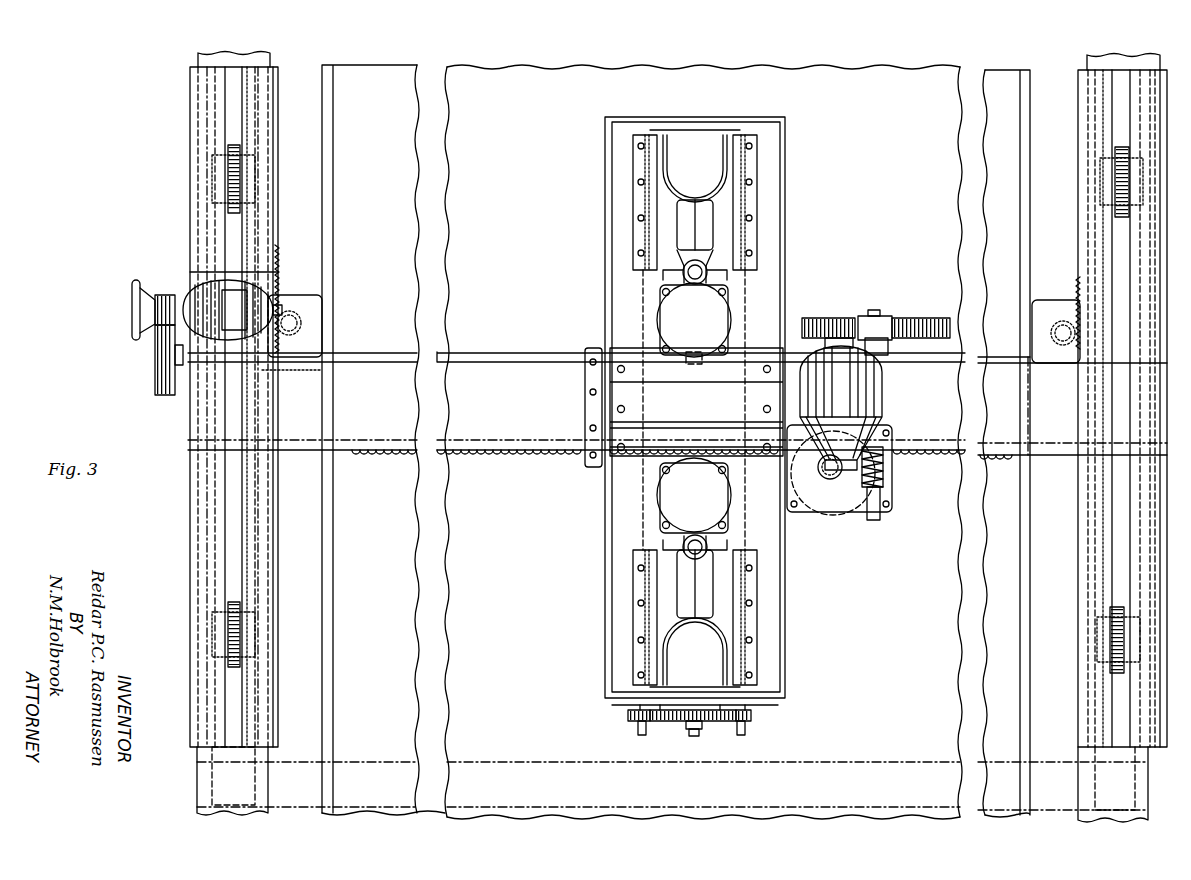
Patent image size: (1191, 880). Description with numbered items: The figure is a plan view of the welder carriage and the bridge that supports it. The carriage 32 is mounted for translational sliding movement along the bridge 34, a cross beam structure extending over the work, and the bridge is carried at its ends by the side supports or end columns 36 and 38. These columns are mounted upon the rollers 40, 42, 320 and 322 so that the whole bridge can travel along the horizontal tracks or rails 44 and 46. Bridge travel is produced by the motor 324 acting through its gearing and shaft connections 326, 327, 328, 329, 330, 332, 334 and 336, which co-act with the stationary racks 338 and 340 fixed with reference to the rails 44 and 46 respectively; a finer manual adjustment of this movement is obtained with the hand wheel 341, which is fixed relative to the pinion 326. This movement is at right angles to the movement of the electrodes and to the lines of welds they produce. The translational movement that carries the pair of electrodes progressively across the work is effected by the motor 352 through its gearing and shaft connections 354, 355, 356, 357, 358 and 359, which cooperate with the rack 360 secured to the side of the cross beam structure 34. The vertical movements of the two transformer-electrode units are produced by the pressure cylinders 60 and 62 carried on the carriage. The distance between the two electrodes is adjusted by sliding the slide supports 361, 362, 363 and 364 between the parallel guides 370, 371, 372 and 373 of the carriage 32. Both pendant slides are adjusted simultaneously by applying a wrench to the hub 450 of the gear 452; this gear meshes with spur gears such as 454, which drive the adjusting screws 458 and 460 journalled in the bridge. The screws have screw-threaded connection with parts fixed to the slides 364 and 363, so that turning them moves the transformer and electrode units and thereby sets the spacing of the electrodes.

The carriage 32 is at (605, 285).
The bridge 34 is at (510, 455).
The end column 36 is at (190, 180).
The end column 38 is at (1135, 250).
The roller 40 is at (240, 615).
The roller 42 is at (1115, 645).
The horizontal track 44 is at (232, 712).
The horizontal track 46 is at (1115, 710).
The pressure cylinder 60 is at (697, 332).
The pressure cylinder 62 is at (697, 507).
The roller 320 is at (1115, 185).
The roller 322 is at (240, 175).
The motor 324 is at (190, 290).
The pinion 326 is at (163, 295).
The gearing and shaft connection 327 is at (155, 386).
The gearing and shaft connection 328 is at (181, 368).
The gearing and shaft connection 329 is at (290, 308).
The gearing and shaft connection 330 is at (302, 323).
The gearing and shaft connection 332 is at (1040, 318).
The gearing and shaft connection 334 is at (1060, 348).
The gearing and shaft connection 336 is at (1028, 367).
The stationary rack 338 is at (277, 247).
The stationary rack 340 is at (1076, 283).
The hand wheel 341 is at (132, 306).
The motor 352 is at (882, 396).
The gearing and shaft connection 354 is at (843, 318).
The gearing and shaft connection 355 is at (903, 318).
The gearing and shaft connection 356 is at (878, 430).
The gearing and shaft connection 357 is at (884, 478).
The gearing and shaft connection 358 is at (850, 510).
The gearing and shaft connection 359 is at (826, 482).
The rack 360 is at (548, 458).
The slide support 361 is at (727, 215).
The slide support 362 is at (675, 172).
The slide support 363 is at (665, 632).
The slide support 364 is at (720, 186).
The parallel guide 370 is at (633, 160).
The parallel guide 371 is at (757, 160).
The parallel guide 372 is at (633, 615).
The parallel guide 373 is at (757, 612).
The hub 450 is at (693, 737).
The gear 452 is at (668, 721).
The spur gear 454 is at (628, 715).
The adjusting screw 458 is at (640, 535).
The adjusting screw 460 is at (745, 545).